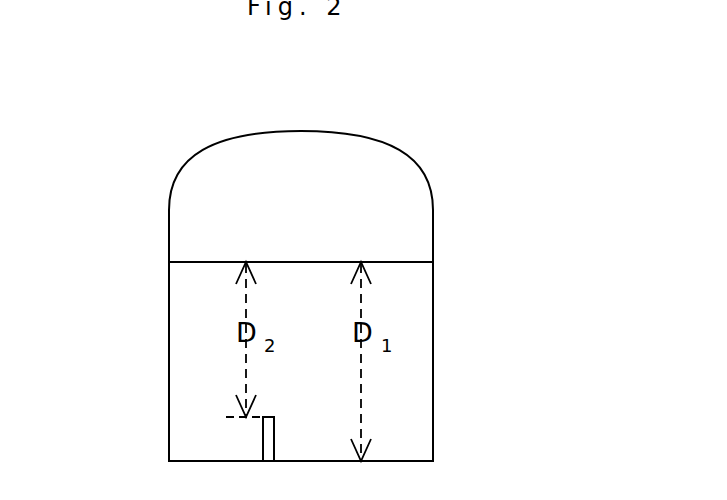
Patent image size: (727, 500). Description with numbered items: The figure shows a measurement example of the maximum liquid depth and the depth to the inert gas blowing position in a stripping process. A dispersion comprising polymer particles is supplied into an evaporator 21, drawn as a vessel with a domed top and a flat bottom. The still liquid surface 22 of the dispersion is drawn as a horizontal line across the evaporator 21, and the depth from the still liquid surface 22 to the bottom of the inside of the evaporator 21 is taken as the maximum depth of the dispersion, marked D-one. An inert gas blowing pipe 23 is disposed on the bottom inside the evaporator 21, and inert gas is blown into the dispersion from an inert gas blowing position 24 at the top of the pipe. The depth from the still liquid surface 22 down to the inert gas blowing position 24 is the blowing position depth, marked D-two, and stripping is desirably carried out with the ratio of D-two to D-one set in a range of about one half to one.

The evaporator 21 is at (425, 172).
The still liquid surface 22 is at (403, 262).
The inert gas blowing pipe 23 is at (263, 439).
The inert gas blowing position 24 is at (238, 414).